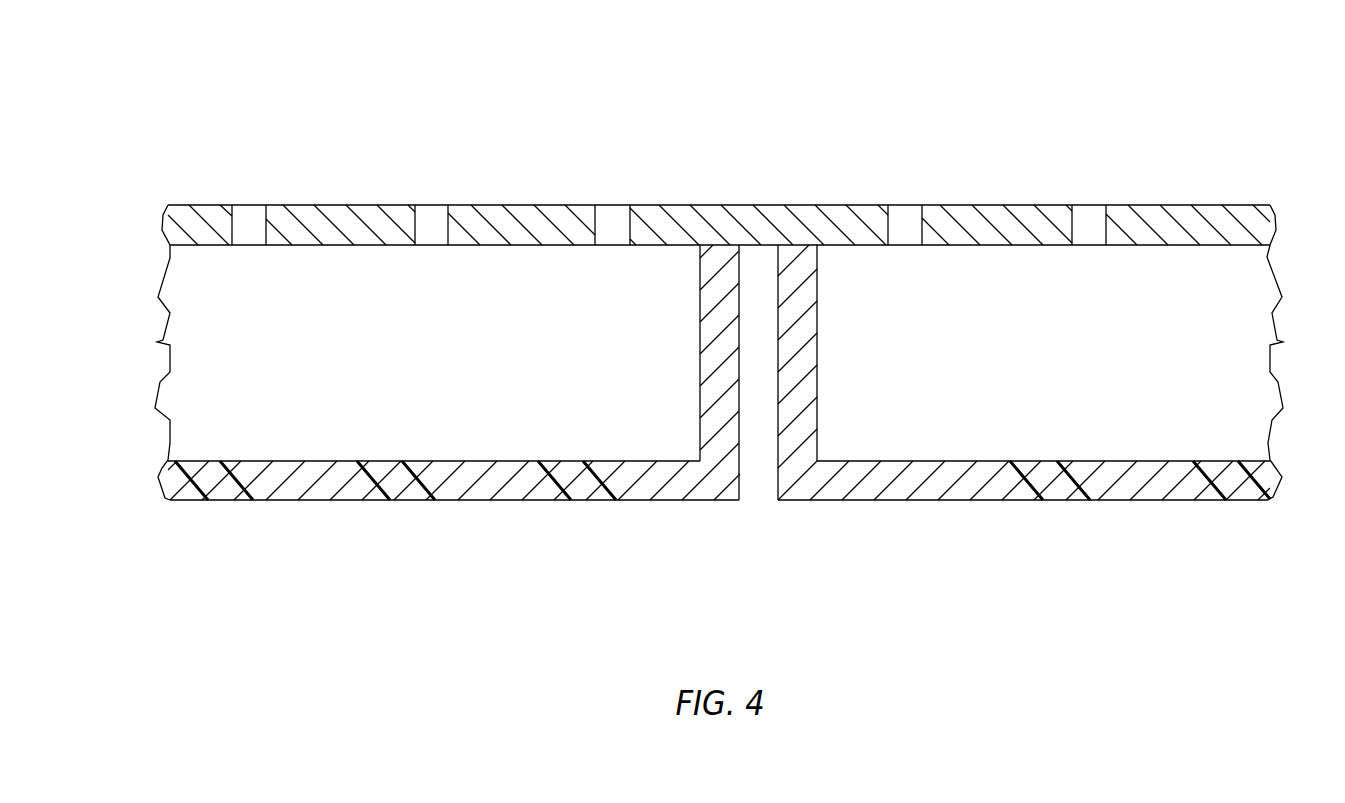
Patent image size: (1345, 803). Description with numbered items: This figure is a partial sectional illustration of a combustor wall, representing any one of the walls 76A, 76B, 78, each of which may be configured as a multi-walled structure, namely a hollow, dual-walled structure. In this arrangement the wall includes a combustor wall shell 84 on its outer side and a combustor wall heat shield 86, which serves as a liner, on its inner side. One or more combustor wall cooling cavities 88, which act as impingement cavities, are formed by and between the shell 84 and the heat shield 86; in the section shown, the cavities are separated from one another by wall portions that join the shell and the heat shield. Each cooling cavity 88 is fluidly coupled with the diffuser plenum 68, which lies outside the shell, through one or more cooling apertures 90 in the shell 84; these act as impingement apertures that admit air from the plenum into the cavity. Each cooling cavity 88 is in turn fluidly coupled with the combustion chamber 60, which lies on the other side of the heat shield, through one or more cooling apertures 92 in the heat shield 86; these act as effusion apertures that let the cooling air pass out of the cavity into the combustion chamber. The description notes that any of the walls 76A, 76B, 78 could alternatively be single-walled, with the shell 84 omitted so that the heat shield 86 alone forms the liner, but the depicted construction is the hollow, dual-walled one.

The combustion chamber 60 is at (761, 625).
The diffuser plenum 68 is at (751, 103).
The wall 76A is at (734, 322).
The wall 76B is at (734, 322).
The wall 78 is at (1196, 131).
The combustor wall shell 84 is at (512, 203).
The combustor wall heat shield 86 is at (673, 503).
The combustor wall cooling cavity 88 is at (426, 372).
The cooling aperture 90 is at (249, 213).
The cooling aperture 92 is at (223, 492).